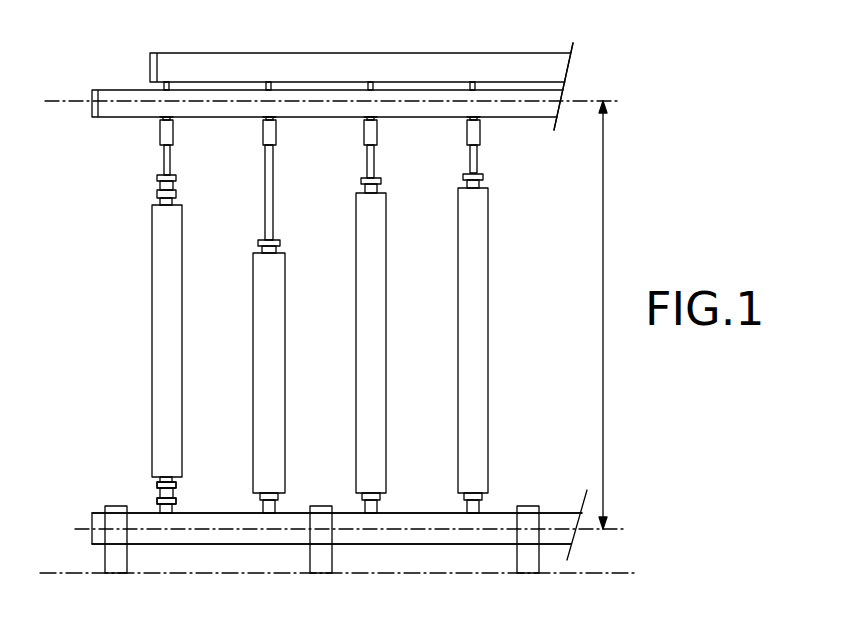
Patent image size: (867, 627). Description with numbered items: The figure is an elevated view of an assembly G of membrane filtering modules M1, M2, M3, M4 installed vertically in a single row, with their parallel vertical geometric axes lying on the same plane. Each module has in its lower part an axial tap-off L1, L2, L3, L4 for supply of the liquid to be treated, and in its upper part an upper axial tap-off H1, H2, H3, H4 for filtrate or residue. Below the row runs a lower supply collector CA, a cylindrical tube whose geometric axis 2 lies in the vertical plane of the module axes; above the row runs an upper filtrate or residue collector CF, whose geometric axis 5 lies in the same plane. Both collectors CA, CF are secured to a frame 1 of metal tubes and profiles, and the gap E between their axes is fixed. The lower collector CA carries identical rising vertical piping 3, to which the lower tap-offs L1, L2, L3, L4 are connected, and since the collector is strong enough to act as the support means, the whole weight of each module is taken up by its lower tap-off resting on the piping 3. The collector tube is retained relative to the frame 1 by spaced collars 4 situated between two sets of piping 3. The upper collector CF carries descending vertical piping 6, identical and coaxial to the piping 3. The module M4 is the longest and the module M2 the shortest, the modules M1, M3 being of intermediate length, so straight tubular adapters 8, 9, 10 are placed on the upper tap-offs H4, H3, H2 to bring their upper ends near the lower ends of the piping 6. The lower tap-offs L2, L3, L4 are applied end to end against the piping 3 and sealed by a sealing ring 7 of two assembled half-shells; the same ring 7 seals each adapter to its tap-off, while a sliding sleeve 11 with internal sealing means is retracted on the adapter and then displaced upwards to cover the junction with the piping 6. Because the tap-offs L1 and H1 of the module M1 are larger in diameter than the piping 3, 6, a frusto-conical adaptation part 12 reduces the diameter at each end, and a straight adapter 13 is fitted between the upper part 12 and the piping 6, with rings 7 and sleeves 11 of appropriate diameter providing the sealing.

The frame 1 is at (581, 69).
The geometric axis of the lower collector 2 is at (143, 528).
The rising vertical piping 3 is at (480, 513).
The collar 4 is at (112, 556).
The geometric axis of the upper collector 5 is at (580, 118).
The descending vertical piping 6 is at (158, 120).
The sealing ring 7 is at (261, 245).
The adapter 8 is at (480, 164).
The adapter 9 is at (366, 160).
The adapter 10 is at (262, 182).
The sliding sleeve 11 is at (175, 134).
The adaptation part 12 is at (156, 183).
The straight adapter 13 is at (161, 156).
The upper collector CF is at (109, 91).
The lower supply collector CA is at (556, 518).
The gap E is at (603, 300).
The assembly G is at (128, 298).
The upper axial tap-off H1 is at (157, 200).
The upper axial tap-off H2 is at (278, 250).
The upper axial tap-off H3 is at (361, 192).
The upper axial tap-off H4 is at (483, 186).
The lower axial tap-off L1 is at (180, 486).
The lower axial tap-off L2 is at (283, 494).
The lower axial tap-off L3 is at (386, 494).
The lower axial tap-off L4 is at (490, 494).
The membrane filtering module M1 is at (166, 357).
The membrane filtering module M2 is at (270, 363).
The membrane filtering module M3 is at (372, 361).
The membrane filtering module M4 is at (475, 361).